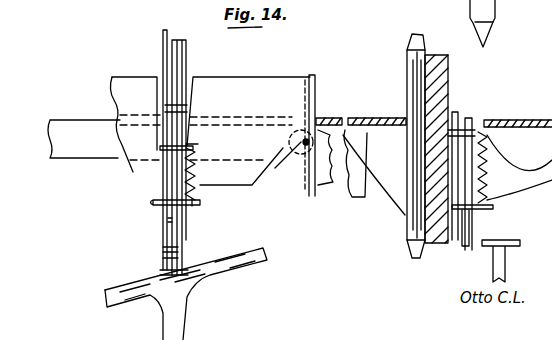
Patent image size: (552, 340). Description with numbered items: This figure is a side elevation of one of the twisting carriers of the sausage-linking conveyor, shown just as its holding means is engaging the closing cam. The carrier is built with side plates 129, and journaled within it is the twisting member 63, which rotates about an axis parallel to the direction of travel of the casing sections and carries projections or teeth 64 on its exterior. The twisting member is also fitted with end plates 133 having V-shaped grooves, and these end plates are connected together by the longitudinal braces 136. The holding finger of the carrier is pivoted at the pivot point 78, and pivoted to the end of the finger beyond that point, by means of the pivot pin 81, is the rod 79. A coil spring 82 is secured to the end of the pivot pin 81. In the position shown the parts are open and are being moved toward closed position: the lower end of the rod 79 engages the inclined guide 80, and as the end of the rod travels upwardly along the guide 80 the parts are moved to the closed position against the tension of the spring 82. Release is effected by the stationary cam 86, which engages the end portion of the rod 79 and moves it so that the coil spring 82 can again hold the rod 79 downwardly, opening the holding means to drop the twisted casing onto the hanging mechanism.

The pivot point 78 is at (166, 70).
The rod 79 is at (170, 239).
The inclined guide 80 is at (492, 9).
The pivot pin 81 is at (184, 147).
The coil spring 82 is at (198, 188).
The stationary cam 86 is at (501, 239).
The twisting member 63 is at (410, 93).
The teeth 64 is at (416, 38).
The side plate 129 is at (257, 97).
The end plate 133 is at (317, 103).
The longitudinal brace 136 is at (367, 130).